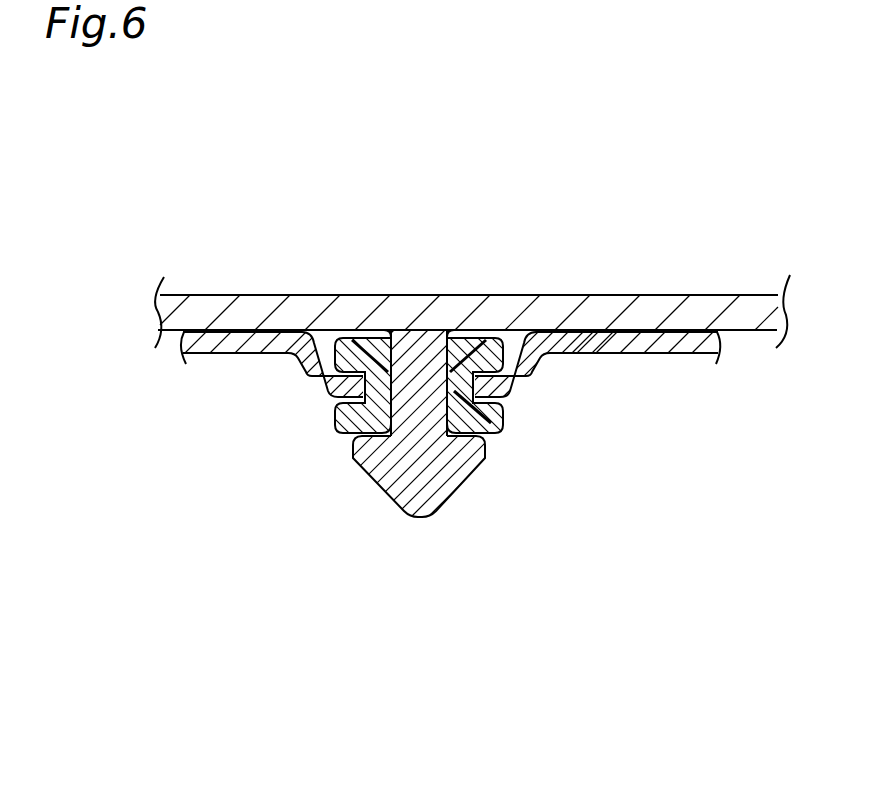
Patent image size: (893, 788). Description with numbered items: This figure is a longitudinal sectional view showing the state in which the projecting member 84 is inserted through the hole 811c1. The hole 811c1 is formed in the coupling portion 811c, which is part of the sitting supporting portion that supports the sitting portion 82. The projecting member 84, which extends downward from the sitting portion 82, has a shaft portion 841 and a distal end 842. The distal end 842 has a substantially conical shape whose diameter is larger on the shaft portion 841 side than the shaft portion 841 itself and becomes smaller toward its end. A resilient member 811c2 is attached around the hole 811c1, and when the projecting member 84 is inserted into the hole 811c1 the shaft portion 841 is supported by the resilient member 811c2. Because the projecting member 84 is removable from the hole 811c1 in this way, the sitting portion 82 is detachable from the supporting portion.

The sitting portion 82 is at (420, 310).
The coupling portion 811c is at (231, 350).
The hole 811c1 is at (325, 399).
The resilient member 811c2 is at (366, 418).
The projecting member 84 is at (419, 449).
The shaft portion 841 is at (420, 360).
The distal end 842 is at (313, 493).